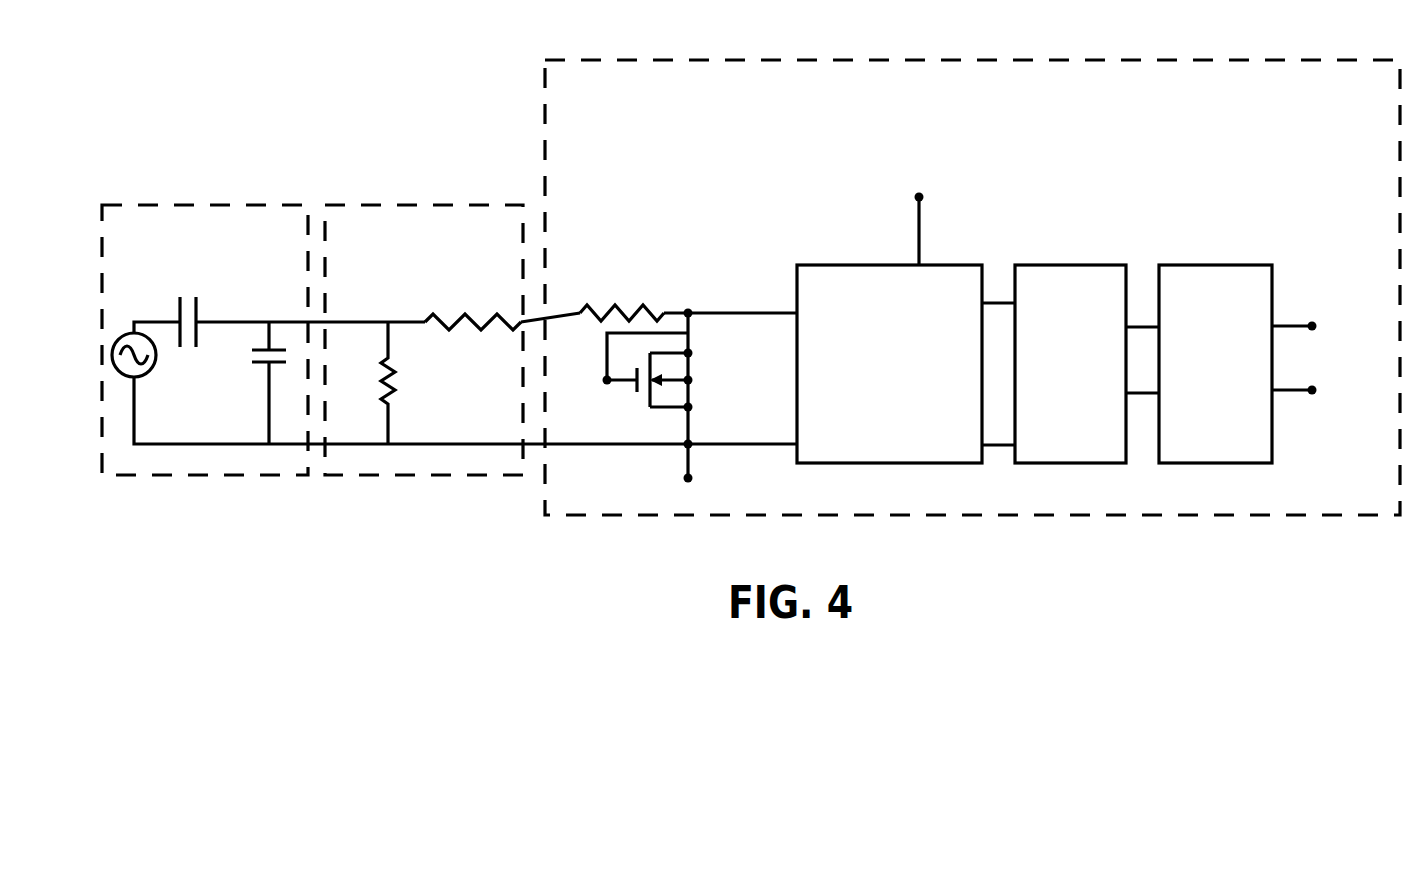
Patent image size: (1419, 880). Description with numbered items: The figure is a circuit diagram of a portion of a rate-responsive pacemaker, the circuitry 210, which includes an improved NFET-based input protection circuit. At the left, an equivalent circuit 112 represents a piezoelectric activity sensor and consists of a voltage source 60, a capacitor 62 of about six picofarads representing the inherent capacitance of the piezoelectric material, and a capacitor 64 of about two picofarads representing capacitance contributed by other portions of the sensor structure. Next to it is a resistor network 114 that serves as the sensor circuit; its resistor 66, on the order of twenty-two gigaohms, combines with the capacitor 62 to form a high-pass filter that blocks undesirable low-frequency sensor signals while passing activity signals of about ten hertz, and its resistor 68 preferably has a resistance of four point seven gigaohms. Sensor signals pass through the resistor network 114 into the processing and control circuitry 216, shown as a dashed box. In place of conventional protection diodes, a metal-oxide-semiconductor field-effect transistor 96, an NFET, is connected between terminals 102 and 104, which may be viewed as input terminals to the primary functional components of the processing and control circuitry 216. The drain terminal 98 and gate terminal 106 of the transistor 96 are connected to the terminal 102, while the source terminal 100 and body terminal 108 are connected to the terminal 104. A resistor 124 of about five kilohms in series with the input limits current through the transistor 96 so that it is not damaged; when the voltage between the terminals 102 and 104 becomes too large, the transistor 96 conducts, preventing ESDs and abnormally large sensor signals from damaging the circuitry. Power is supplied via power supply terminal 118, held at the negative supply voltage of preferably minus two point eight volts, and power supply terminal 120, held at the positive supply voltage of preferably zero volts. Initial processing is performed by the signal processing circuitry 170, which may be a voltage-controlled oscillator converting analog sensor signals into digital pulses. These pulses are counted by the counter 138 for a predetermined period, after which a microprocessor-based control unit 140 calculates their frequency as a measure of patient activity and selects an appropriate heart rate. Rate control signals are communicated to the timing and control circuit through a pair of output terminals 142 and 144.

The circuitry 210 is at (247, 58).
The processing and control circuitry 216 is at (835, 60).
The equivalent circuit 112 is at (152, 205).
The resistor network 114 is at (367, 205).
The voltage source 60 is at (134, 334).
The capacitor 62 is at (186, 300).
The capacitor 64 is at (254, 360).
The resistor 66 is at (384, 380).
The resistor 68 is at (488, 330).
The resistor 124 is at (617, 305).
The terminal 102 is at (688, 313).
The metal-oxide-semiconductor field-effect transistor 96 is at (654, 378).
The drain terminal 98 is at (688, 353).
The body terminal 108 is at (692, 386).
The source terminal 100 is at (688, 407).
The gate terminal 106 is at (607, 380).
The terminal 104 is at (688, 444).
The power supply terminal 118 is at (688, 478).
The signal processing circuitry 170 is at (862, 236).
The power supply terminal 120 is at (919, 197).
The counter 138 is at (1085, 265).
The control unit 140 is at (1190, 265).
The output terminal 142 is at (1312, 326).
The output terminal 144 is at (1312, 390).